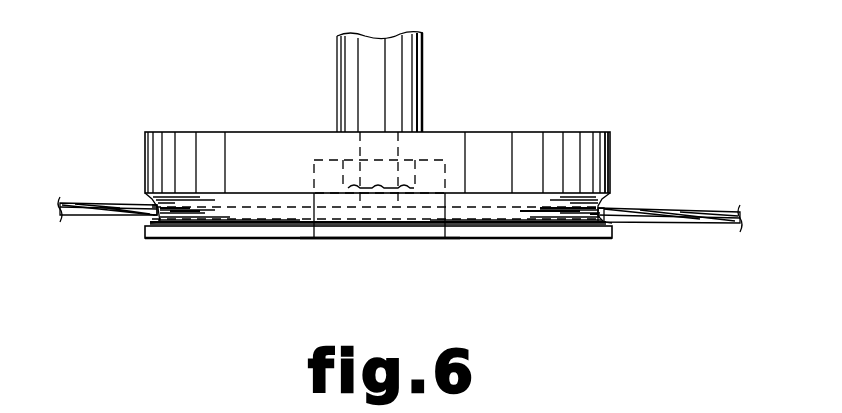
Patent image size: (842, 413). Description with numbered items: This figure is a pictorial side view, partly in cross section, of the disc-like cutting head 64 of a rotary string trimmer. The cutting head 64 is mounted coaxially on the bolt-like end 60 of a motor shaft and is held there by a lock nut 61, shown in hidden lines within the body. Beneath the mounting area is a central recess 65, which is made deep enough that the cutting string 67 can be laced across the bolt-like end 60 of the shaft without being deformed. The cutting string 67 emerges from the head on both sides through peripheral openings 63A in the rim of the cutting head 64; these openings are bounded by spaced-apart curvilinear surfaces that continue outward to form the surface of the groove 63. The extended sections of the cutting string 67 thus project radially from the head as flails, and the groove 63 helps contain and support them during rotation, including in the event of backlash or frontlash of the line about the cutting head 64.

The bolt-like end of motor shaft 60 is at (357, 67).
The lock nut 61 is at (405, 170).
The groove 63 is at (217, 238).
The peripheral openings 63A is at (138, 222).
The cutting head 64 is at (558, 133).
The central recess 65 is at (383, 240).
The cutting string 67 is at (85, 218).